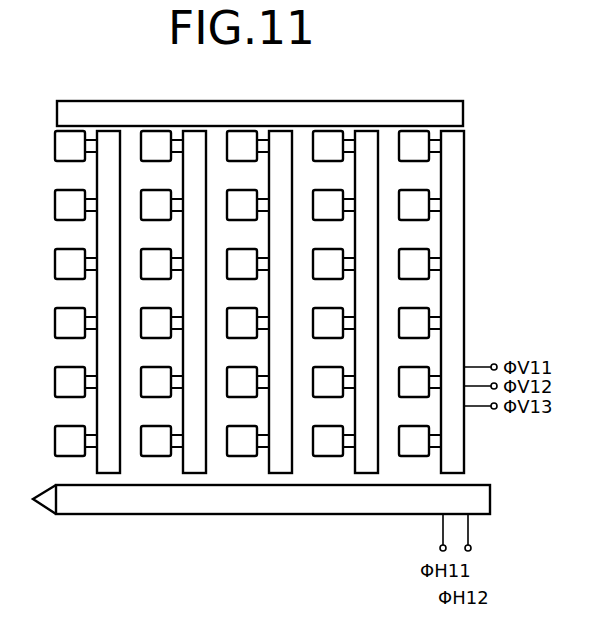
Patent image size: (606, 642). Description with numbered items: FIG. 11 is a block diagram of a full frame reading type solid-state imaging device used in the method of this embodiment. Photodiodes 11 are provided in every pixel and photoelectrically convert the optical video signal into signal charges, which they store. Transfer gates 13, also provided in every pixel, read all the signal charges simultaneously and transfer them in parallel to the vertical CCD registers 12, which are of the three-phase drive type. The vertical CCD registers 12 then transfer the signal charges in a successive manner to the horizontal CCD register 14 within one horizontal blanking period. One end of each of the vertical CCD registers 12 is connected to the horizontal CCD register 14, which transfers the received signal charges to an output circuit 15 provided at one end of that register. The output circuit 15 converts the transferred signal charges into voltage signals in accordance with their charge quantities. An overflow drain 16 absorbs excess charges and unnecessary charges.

The photodiode 11 is at (420, 147).
The vertical CCD register 12 is at (453, 262).
The transfer gate 13 is at (430, 205).
The horizontal CCD register 14 is at (460, 497).
The output circuit 15 is at (45, 505).
The overflow drain 16 is at (425, 113).